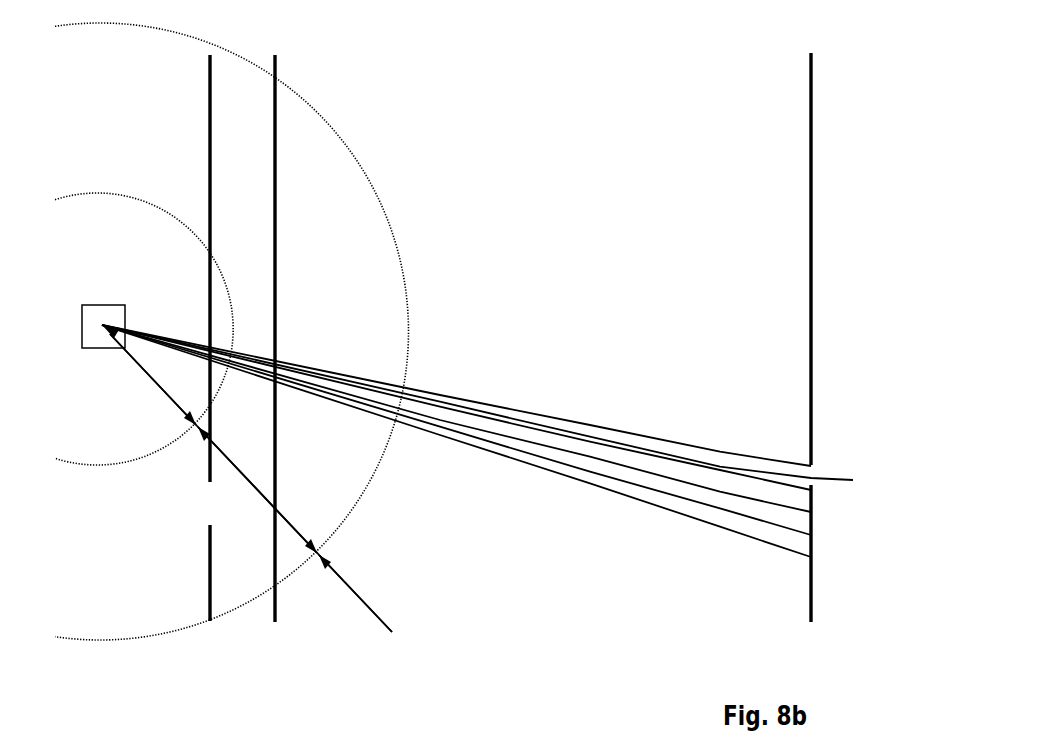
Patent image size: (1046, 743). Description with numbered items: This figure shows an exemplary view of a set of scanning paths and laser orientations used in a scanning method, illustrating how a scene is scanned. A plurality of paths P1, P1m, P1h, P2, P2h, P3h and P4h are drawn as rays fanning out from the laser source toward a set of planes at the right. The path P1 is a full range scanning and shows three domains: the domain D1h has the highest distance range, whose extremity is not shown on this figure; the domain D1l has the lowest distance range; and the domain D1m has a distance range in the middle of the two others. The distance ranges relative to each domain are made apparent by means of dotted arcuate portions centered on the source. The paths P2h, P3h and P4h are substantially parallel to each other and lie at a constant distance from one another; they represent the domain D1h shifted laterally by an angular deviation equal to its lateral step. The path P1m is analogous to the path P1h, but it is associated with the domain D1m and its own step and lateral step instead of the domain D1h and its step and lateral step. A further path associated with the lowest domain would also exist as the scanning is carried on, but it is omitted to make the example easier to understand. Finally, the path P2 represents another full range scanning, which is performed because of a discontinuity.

The domain D1l is at (142, 379).
The domain D1m is at (257, 490).
The domain D1h is at (346, 593).
The path P2 is at (473, 395).
The path P4h is at (477, 402).
The path P1m is at (479, 410).
The path P3h is at (477, 419).
The path P2h is at (477, 430).
The path P1h is at (477, 441).
The path P1 is at (827, 337).